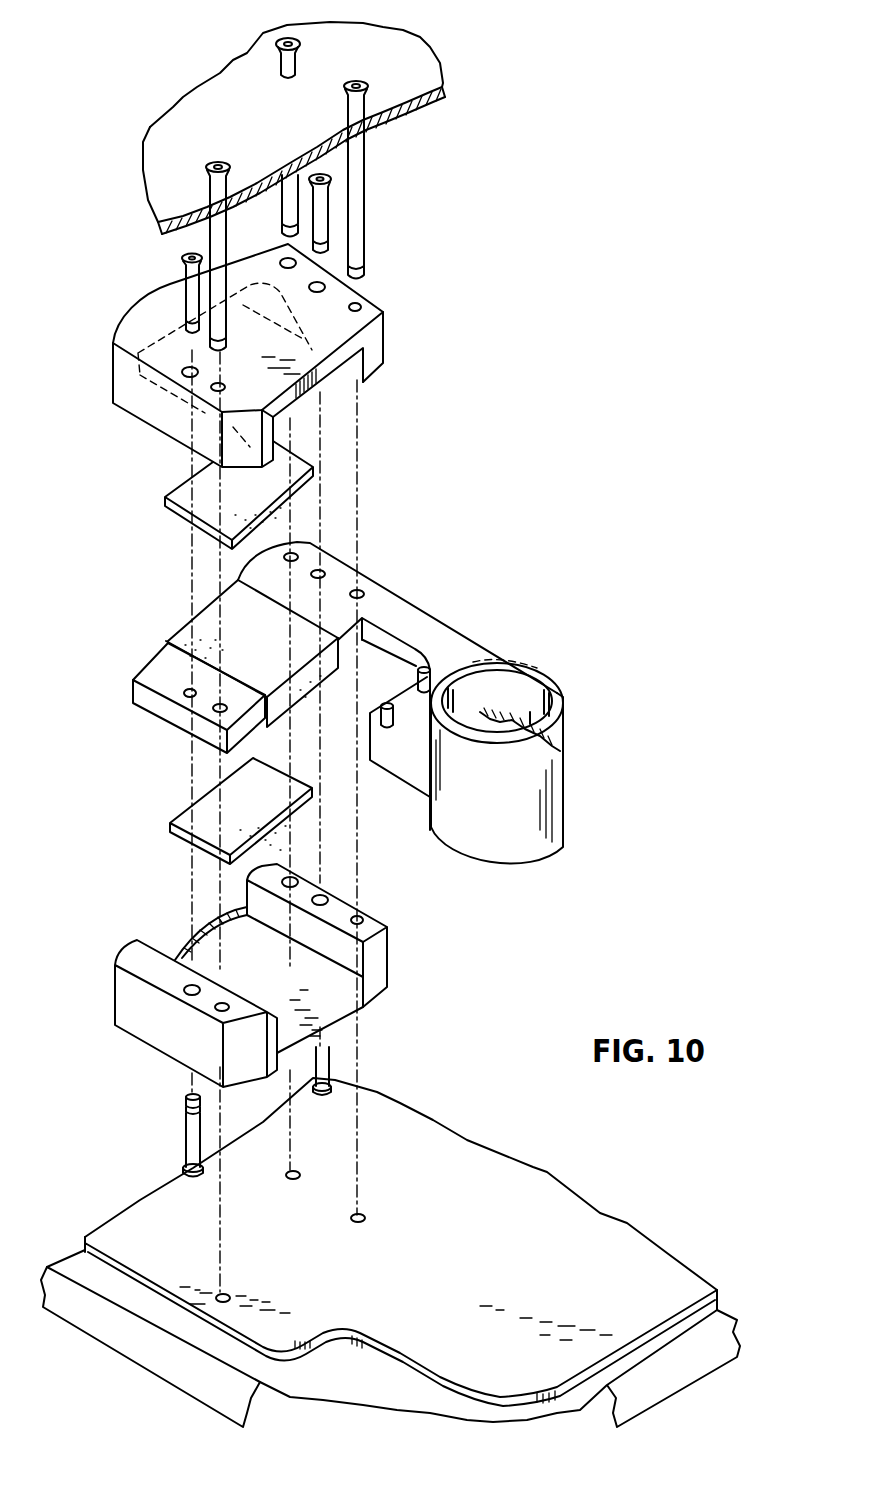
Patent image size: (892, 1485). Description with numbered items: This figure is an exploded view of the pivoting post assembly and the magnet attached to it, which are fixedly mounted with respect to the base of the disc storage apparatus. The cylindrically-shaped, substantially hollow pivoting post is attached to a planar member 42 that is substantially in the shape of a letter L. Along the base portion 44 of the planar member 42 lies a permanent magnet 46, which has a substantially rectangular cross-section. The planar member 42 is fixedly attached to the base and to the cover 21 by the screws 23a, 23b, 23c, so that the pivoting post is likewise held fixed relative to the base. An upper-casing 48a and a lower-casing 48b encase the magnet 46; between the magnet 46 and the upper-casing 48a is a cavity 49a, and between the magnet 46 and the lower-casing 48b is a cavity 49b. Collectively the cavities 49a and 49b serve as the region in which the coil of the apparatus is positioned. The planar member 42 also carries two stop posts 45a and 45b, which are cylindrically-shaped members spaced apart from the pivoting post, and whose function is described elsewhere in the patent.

The cover 21 is at (431, 63).
The screw 23a is at (216, 162).
The screw 23b is at (278, 56).
The screw 23c is at (362, 82).
The planar member 42 is at (421, 614).
The base portion 44 is at (134, 675).
The stop post 45a is at (431, 663).
The stop post 45b is at (370, 716).
The permanent magnet 46 is at (278, 657).
The upper-casing 48a is at (386, 341).
The lower-casing 48b is at (388, 968).
The cavity 49a is at (360, 412).
The cavity 49b is at (285, 977).